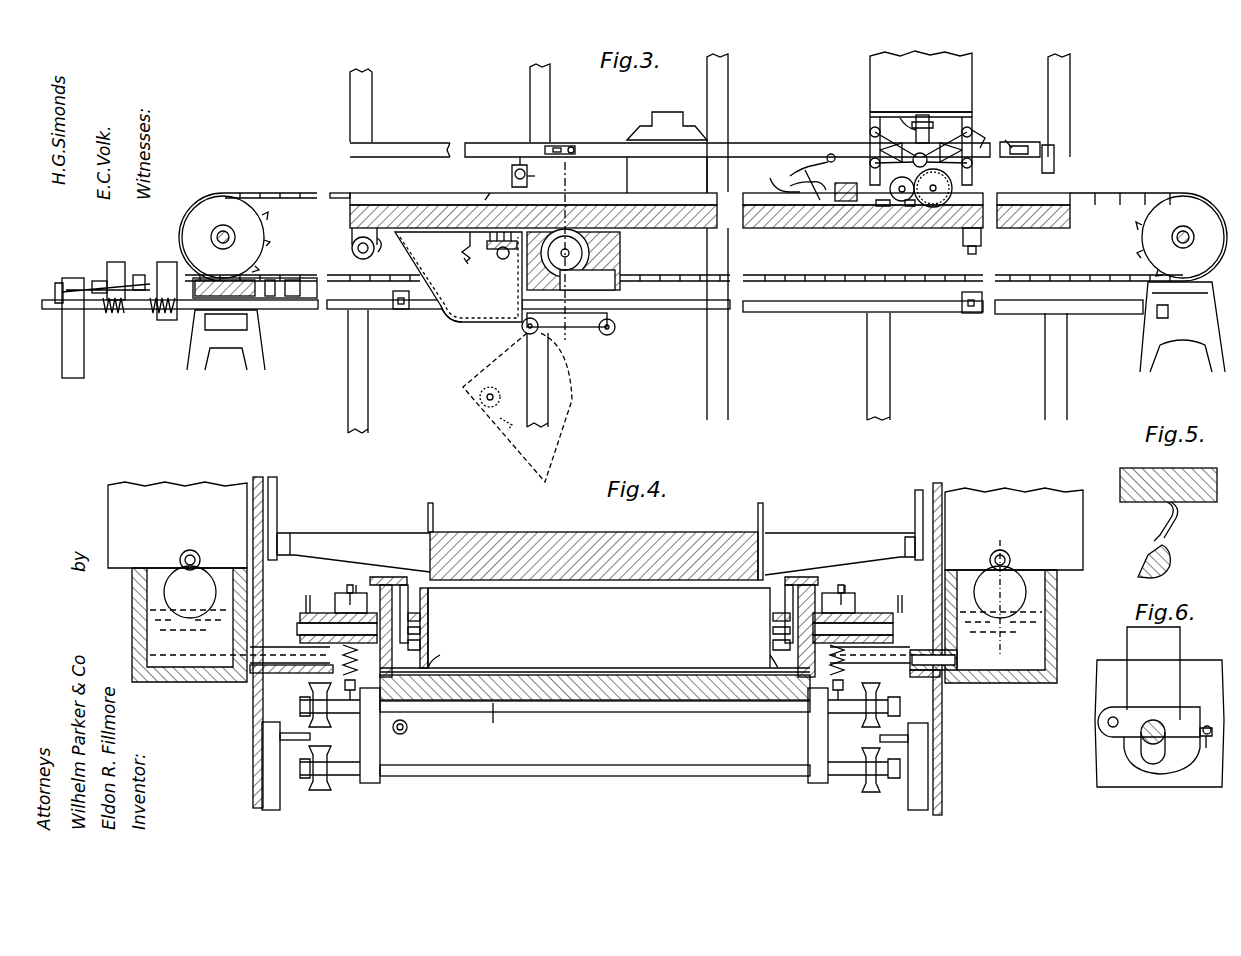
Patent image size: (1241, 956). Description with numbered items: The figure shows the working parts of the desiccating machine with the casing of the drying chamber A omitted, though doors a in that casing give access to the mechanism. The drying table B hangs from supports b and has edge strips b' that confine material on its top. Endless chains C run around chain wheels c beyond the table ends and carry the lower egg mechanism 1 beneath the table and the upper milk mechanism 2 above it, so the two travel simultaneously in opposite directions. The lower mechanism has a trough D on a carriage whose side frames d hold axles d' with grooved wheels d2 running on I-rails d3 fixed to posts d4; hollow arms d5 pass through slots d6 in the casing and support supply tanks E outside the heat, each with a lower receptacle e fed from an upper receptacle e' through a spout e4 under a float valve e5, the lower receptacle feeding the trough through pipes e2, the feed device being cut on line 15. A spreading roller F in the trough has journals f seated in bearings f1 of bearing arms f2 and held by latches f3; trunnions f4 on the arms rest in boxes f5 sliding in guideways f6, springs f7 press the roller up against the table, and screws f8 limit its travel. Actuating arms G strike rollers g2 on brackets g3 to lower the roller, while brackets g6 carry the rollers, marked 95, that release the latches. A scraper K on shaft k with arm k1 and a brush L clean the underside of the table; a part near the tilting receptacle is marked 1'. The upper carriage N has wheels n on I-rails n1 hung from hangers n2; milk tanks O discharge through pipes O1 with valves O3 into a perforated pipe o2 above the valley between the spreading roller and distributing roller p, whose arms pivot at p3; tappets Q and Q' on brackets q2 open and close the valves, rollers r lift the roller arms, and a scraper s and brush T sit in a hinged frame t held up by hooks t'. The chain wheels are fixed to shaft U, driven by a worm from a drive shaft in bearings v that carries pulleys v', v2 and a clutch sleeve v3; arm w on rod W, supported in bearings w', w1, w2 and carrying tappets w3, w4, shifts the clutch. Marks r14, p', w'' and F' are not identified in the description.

In FIG. 3, the hangers or supports n2 is at (374, 104).
In FIG. 3, the I-rails n1 is at (762, 150).
In FIG. 3, the grooved wheels n is at (983, 133).
In FIG. 3, the tappet arm Q' is at (1027, 145).
In FIG. 3, the brackets q2 is at (578, 148).
In FIG. 3, the drying table B is at (410, 208).
In FIG. 4, the drying table B is at (563, 540).
In FIG. 5, the drying table B is at (1134, 470).
In FIG. 3, the endless chains C is at (312, 196).
In FIG. 3, the shaft U is at (215, 233).
In FIG. 3, the chain wheels c is at (262, 226).
In FIG. 3, the operating arm w is at (592, 319).
In FIG. 3, the tappet finger w3 is at (402, 313).
In FIG. 3, the tappet finger w4 is at (966, 314).
In FIG. 4, the tappet finger w4 is at (408, 726).
In FIG. 3, the bearing w2 is at (1155, 312).
In FIG. 3, the bearings v is at (235, 335).
In FIG. 3, the bearing w1 is at (80, 302).
In FIG. 3, the pulley v' is at (197, 267).
In FIG. 3, the bearing w' is at (118, 263).
In FIG. 3, the sliding clutch sleeve v3 is at (150, 275).
In FIG. 3, the pulley v2 is at (162, 302).
In FIG. 3, the screw shaft housing w'' is at (237, 315).
In FIG. 3, the rollers g2 is at (353, 248).
In FIG. 3, the brackets g3 is at (386, 256).
In FIG. 3, the lower spreading and scraping mechanism 1 is at (458, 291).
In FIG. 4, the lower spreading and scraping mechanism 1 is at (595, 722).
In FIG. 3, the hopper lip 1' is at (451, 327).
In FIG. 3, the knife or scraper K is at (462, 254).
In FIG. 5, the knife or scraper K is at (1163, 515).
In FIG. 3, the arm k1 is at (465, 274).
In FIG. 3, the brush L is at (503, 259).
In FIG. 3, the trough D is at (618, 262).
In FIG. 4, the trough D is at (587, 700).
In FIG. 6, the trough D is at (1159, 723).
In FIG. 3, the spreading roller F is at (570, 251).
In FIG. 3, the axles d' is at (572, 312).
In FIG. 4, the axles d' is at (502, 723).
In FIG. 3, the side frames d is at (550, 378).
In FIG. 4, the side frames d is at (384, 735).
In FIG. 3, the grooved wheels d2 is at (607, 335).
In FIG. 4, the grooved wheels d2 is at (868, 757).
In FIG. 3, the I-rails d3 is at (378, 312).
In FIG. 4, the I-rails d3 is at (905, 740).
In FIG. 3, the posts or supports d4 is at (350, 395).
In FIG. 4, the posts or supports d4 is at (910, 800).
In FIG. 3, the rollers r is at (517, 165).
In FIG. 3, the hanger pin r14 is at (547, 174).
In FIG. 3, the flanges or strips b' is at (489, 182).
In FIG. 4, the flanges or strips b' is at (606, 538).
In FIG. 3, the tappet arm Q is at (564, 137).
In FIG. 3, the milk tanks or reservoirs O is at (921, 81).
In FIG. 3, the truck or carriage N is at (942, 150).
In FIG. 3, the discharge pipes O1 is at (922, 115).
In FIG. 3, the valves O3 is at (900, 122).
In FIG. 3, the upper spreading and scraping mechanism 2 is at (990, 89).
In FIG. 3, the distributing roller p is at (956, 188).
In FIG. 3, the pinion p' is at (894, 219).
In FIG. 3, the pivot p3 is at (876, 205).
In FIG. 3, the horizontal pipe o2 is at (907, 206).
In FIG. 3, the brackets g6 is at (963, 232).
In FIG. 3, the lug 95 is at (968, 250).
In FIG. 3, the brush T is at (828, 175).
In FIG. 3, the hooks t' is at (834, 141).
In FIG. 3, the frame t is at (816, 182).
In FIG. 3, the scraper or knife s is at (776, 179).
In FIG. 4, the supply tanks or reservoirs E is at (595, 526).
In FIG. 4, the upper receptacle e' is at (566, 512).
In FIG. 4, the lower receptacle e is at (595, 625).
In FIG. 4, the discharge spout e4 is at (1012, 562).
In FIG. 4, the float-controlled valve e5 is at (990, 559).
In FIG. 4, the float rod 15 is at (1013, 590).
In FIG. 4, the drying chamber A is at (253, 775).
In FIG. 4, the hangers or supports b is at (595, 526).
In FIG. 4, the trough F' is at (595, 630).
In FIG. 4, the bearing arms f2 is at (810, 577).
In FIG. 6, the bearing arms f2 is at (1153, 673).
In FIG. 4, the trunnions f4 is at (893, 637).
In FIG. 4, the bearing boxes f5 is at (855, 612).
In FIG. 4, the guideways f6 is at (850, 600).
In FIG. 4, the actuating arms G is at (900, 600).
In FIG. 4, the adjustable screws f8 is at (838, 700).
In FIG. 4, the keepers or latches f3 is at (773, 616).
In FIG. 6, the keepers or latches f3 is at (1137, 706).
In FIG. 4, the journals f is at (773, 631).
In FIG. 6, the journals f is at (1141, 734).
In FIG. 4, the bearings f1 is at (773, 645).
In FIG. 6, the bearings f1 is at (1148, 746).
In FIG. 4, the springs f7 is at (768, 660).
In FIG. 4, the lateral arms d5 is at (900, 665).
In FIG. 4, the pipes or passages e2 is at (957, 660).
In FIG. 4, the horizontal slots d6 is at (942, 678).
In FIG. 4, the rod W is at (405, 735).
In FIG. 4, the doors a is at (808, 748).
In FIG. 5, the shaft k is at (1170, 560).